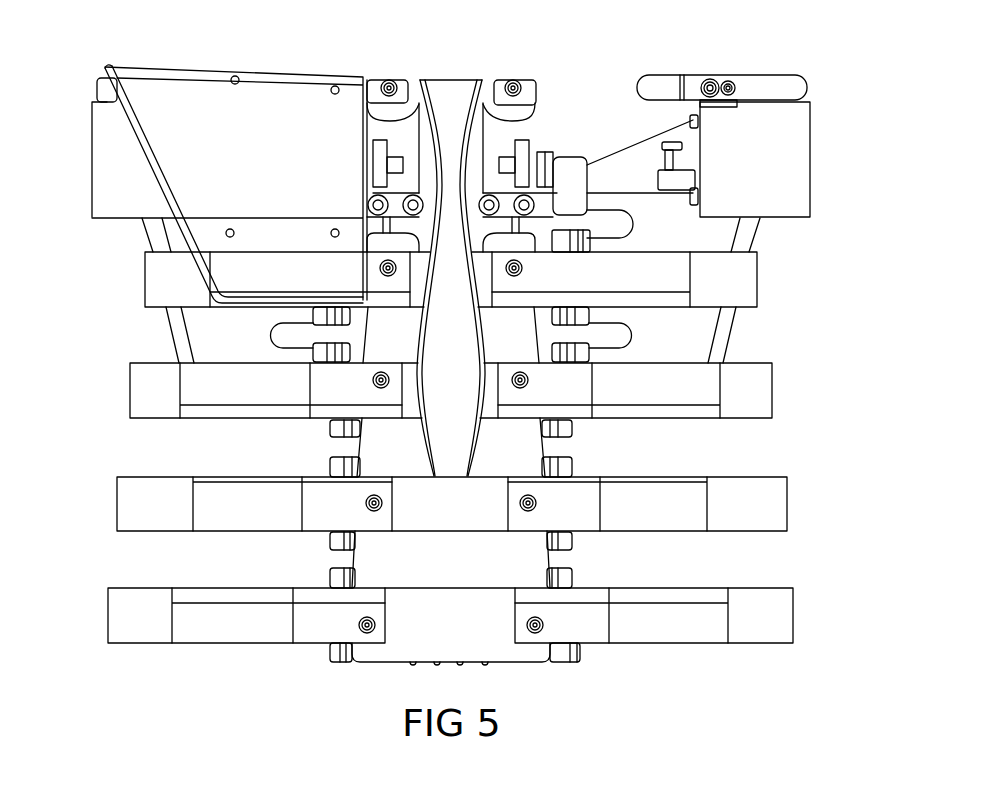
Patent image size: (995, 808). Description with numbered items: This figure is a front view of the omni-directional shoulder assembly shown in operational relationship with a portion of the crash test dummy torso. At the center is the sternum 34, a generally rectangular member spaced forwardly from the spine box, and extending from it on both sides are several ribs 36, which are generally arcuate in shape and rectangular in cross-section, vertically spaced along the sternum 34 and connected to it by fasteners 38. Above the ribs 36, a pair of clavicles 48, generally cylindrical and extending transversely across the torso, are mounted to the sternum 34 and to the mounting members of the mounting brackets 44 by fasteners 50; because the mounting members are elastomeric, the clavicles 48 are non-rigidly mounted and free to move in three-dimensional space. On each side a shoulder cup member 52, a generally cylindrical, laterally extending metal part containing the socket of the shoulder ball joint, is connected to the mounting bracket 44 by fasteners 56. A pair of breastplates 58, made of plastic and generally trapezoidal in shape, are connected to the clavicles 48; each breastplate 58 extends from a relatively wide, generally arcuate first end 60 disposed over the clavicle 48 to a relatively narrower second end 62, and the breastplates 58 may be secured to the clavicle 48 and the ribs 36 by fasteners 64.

The sternum 34 is at (460, 567).
The ribs 36 is at (128, 615).
The fasteners 38 is at (359, 625).
The mounting brackets 44 is at (695, 104).
The clavicles 48 is at (370, 80).
The fasteners 50 is at (396, 82).
The shoulder cup member 52 is at (118, 200).
The fasteners 56 is at (690, 195).
The breastplates 58 is at (160, 183).
The first end 60 is at (158, 72).
The second end 62 is at (243, 288).
The fasteners 64 is at (337, 230).